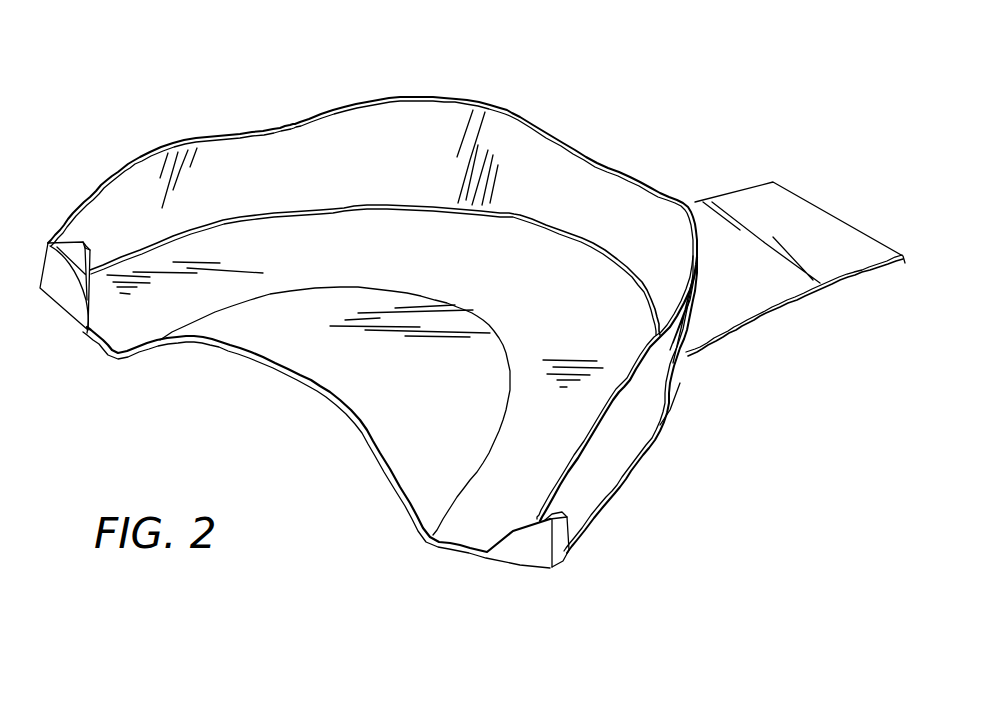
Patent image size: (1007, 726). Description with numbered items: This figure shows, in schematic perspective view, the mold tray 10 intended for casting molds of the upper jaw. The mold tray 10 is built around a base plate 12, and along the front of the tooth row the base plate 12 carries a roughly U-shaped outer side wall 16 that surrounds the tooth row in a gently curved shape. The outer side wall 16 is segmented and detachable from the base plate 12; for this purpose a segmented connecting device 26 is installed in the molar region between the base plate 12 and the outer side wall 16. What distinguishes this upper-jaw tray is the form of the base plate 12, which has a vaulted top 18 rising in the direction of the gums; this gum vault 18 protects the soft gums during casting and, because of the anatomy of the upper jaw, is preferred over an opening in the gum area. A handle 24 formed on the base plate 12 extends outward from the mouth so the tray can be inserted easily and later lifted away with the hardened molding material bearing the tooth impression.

The mold tray 10 is at (563, 182).
The base plate 12 is at (483, 517).
The outer side wall 16 is at (637, 427).
The vaulted top 18 is at (396, 436).
The handle 24 is at (747, 220).
The segmented connecting device 26 is at (82, 335).